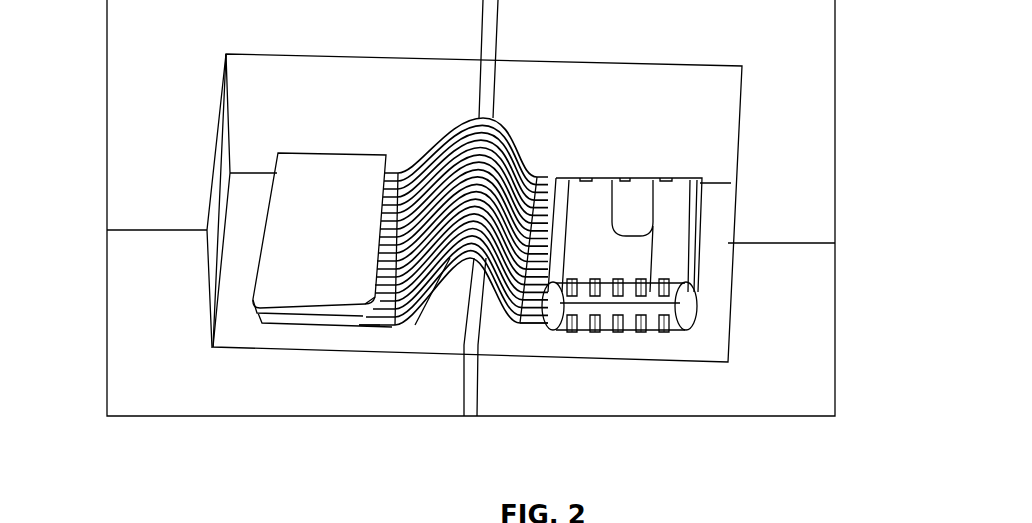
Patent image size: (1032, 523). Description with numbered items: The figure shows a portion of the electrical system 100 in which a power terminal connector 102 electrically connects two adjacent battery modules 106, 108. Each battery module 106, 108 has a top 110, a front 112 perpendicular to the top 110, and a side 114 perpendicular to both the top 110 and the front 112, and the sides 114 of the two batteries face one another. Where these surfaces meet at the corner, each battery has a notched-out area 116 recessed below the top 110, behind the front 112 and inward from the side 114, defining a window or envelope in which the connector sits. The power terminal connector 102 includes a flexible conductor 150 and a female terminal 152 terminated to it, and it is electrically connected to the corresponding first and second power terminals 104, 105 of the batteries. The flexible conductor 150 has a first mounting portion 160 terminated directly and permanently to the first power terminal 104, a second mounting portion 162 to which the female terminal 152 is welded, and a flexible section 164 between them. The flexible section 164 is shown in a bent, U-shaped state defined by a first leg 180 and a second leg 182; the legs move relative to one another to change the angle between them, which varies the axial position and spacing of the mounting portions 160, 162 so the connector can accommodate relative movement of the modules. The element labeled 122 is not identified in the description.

The electrical system 100 is at (578, 96).
The power terminal connector 102 is at (673, 171).
The first power terminal 104 is at (310, 293).
The second power terminal 105 is at (643, 330).
The battery module 106 is at (412, 38).
The battery module 108 is at (538, 38).
The top 110 is at (160, 205).
The front 112 is at (160, 313).
The side 114 is at (473, 378).
The notched-out area 116 is at (446, 340).
The base 122 is at (415, 514).
The flexible conductor 150 is at (444, 131).
The female terminal 152 is at (651, 210).
The first mounting portion 160 is at (377, 331).
The second mounting portion 162 is at (540, 331).
The flexible section 164 is at (432, 298).
The first leg 180 is at (427, 178).
The second leg 182 is at (528, 158).